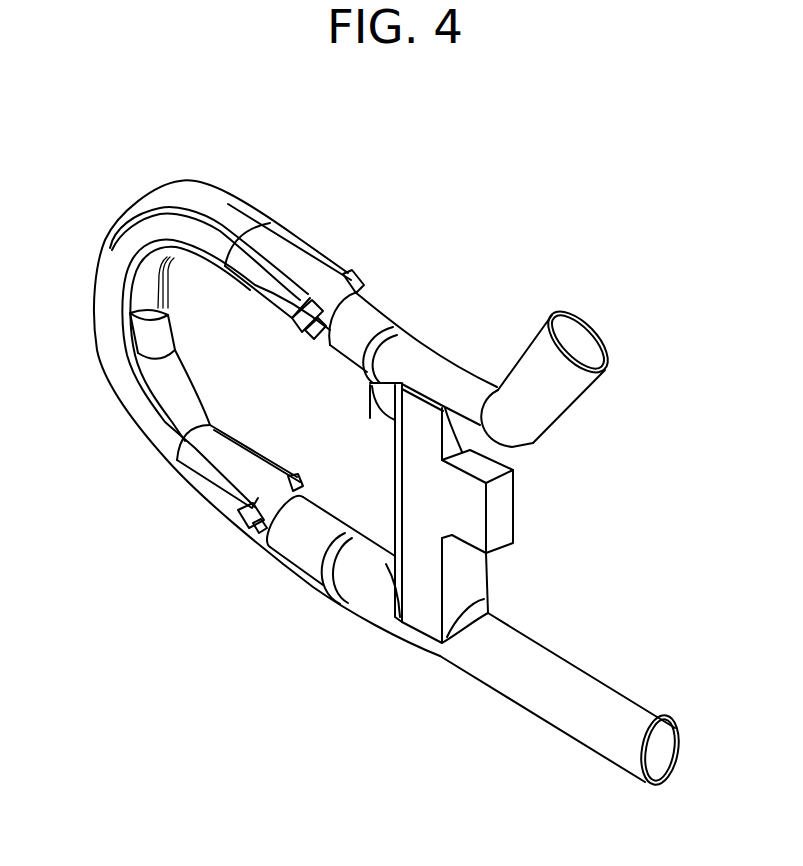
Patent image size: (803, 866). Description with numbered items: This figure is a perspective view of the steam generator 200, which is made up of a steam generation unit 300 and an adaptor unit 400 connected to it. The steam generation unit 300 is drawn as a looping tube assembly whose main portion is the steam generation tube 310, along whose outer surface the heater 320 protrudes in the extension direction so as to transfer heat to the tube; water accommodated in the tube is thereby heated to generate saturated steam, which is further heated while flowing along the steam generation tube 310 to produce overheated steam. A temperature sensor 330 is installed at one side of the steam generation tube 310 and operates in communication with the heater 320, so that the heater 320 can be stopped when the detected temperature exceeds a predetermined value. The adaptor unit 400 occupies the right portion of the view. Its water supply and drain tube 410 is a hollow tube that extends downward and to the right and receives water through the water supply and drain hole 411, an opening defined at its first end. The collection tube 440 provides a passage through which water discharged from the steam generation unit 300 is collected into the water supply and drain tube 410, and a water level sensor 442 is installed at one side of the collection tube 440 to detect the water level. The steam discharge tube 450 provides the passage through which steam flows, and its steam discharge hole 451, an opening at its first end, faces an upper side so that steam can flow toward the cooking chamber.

The steam generator 200 is at (69, 118).
The steam generation unit 300 is at (89, 252).
The steam generation tube 310 is at (180, 192).
The heater 320 is at (207, 480).
The temperature sensor 330 is at (153, 329).
The adaptor unit 400 is at (452, 327).
The water supply and drain tube 410 is at (525, 687).
The water supply and drain hole 411 is at (660, 735).
The collection tube 440 is at (427, 579).
The water level sensor 442 is at (503, 505).
The steam discharge tube 450 is at (562, 403).
The steam discharge hole 451 is at (573, 346).